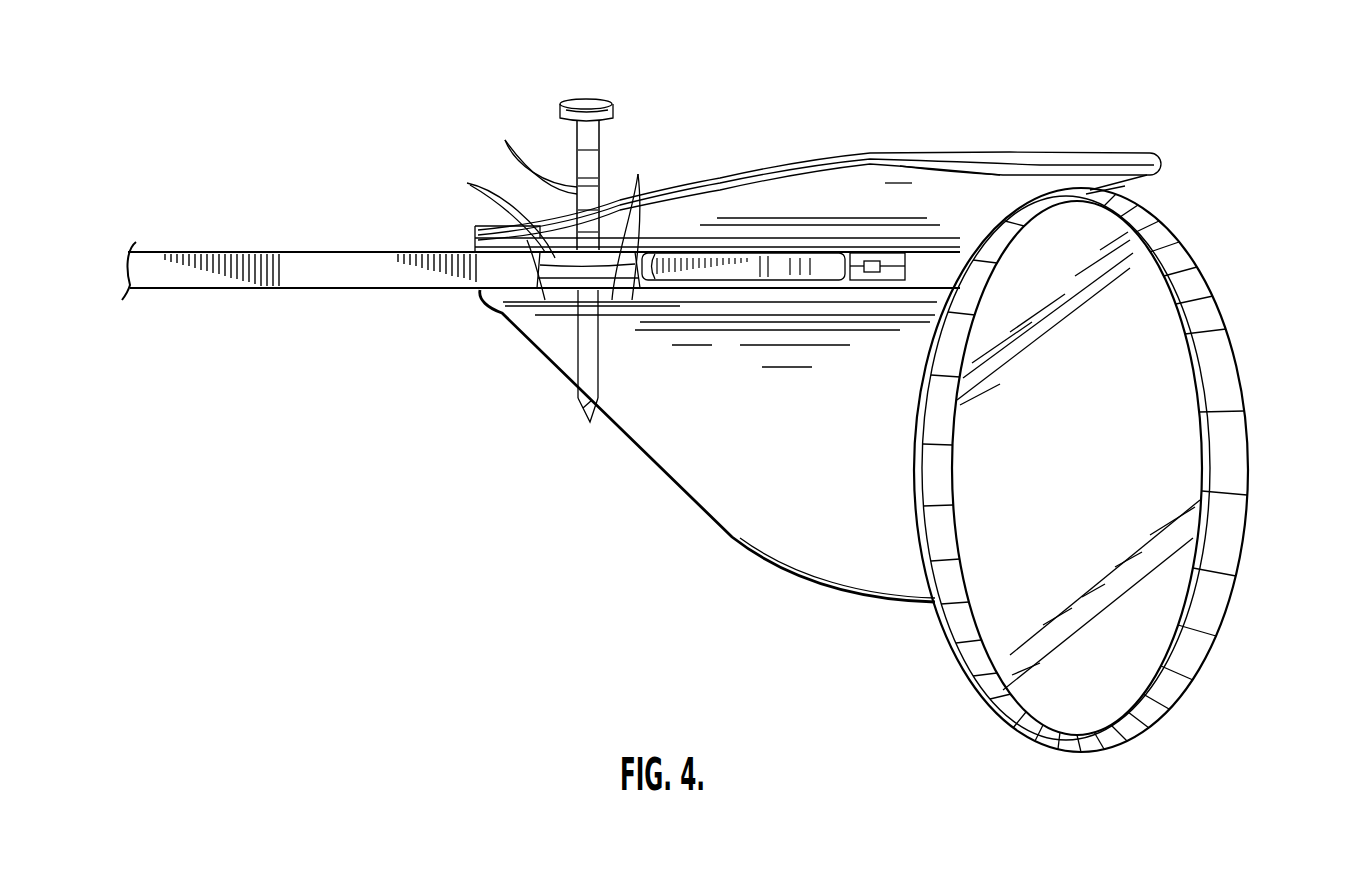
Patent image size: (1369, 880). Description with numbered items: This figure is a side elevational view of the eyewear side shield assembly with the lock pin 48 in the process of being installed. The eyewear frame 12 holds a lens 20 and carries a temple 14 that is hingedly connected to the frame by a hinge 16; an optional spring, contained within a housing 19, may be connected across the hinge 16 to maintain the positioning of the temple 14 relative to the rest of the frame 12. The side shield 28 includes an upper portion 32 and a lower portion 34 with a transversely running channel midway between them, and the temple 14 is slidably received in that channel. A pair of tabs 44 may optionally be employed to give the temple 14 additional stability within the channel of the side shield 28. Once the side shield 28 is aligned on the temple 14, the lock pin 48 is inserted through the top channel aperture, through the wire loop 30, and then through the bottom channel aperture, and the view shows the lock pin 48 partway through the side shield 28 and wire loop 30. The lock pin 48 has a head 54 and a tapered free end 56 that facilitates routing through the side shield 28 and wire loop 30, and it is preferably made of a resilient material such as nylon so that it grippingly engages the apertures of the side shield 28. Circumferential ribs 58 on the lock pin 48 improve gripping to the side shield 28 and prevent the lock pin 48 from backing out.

The eyewear frame 12 is at (1185, 240).
The temple 14 is at (340, 265).
The hinge 16 is at (892, 255).
The housing 19 is at (810, 255).
The lens 20 is at (1130, 361).
The side shield 28 is at (817, 600).
The wire loop 30 is at (580, 282).
The upper portion 32 is at (746, 197).
The lower portion 34 is at (760, 510).
The tabs 44 is at (548, 220).
The lock pin 48 is at (627, 130).
The head 54 is at (588, 100).
The tapered free end 56 is at (590, 406).
The circumferential ribs 58 is at (530, 147).